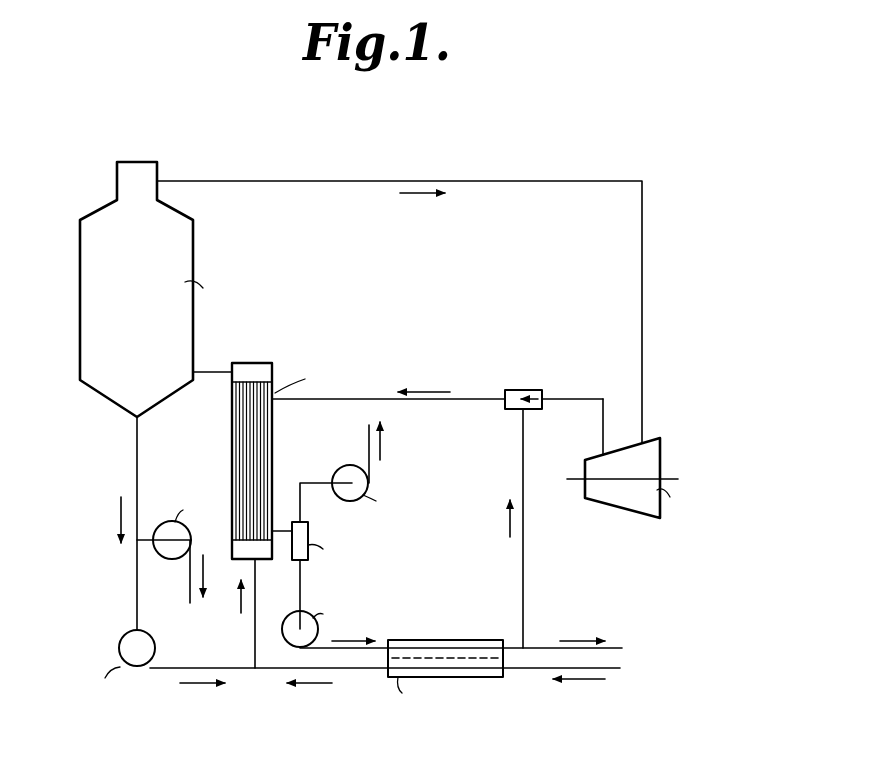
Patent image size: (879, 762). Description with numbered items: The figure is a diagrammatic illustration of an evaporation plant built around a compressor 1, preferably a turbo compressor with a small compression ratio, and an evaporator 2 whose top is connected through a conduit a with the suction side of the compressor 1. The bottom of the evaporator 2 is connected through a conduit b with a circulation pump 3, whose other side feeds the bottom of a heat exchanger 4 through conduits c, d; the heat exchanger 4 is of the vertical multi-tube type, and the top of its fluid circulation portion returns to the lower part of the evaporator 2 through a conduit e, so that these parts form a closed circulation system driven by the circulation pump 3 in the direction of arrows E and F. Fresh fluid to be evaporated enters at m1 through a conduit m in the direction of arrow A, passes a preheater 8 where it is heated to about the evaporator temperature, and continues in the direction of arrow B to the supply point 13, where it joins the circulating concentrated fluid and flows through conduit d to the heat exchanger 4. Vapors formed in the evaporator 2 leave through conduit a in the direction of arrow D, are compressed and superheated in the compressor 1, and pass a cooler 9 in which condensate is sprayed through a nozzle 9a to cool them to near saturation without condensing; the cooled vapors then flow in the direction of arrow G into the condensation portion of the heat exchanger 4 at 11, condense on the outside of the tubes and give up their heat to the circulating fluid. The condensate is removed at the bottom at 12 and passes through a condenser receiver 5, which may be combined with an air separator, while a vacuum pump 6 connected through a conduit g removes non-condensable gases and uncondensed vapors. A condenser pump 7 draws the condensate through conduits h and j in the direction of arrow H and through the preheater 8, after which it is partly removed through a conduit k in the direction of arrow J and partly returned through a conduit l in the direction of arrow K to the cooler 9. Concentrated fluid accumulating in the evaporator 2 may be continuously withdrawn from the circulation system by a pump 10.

The compressor 1 is at (657, 463).
The evaporator 2 is at (185, 255).
The circulation pump 3 is at (148, 642).
The heat exchanger 4 is at (272, 388).
The condenser receiver 5 is at (308, 528).
The vacuum pump 6 is at (368, 486).
The condenser pump 7 is at (377, 626).
The preheater 8 is at (495, 640).
The cooler 9 is at (542, 397).
The nozzle 9a is at (521, 398).
The pump 10 is at (186, 534).
The vapor inlet of heat exchanger 11 is at (275, 402).
The condensate outlet of heat exchanger 12 is at (275, 530).
The supply point 13 is at (255, 668).
The conduit a is at (515, 181).
The conduit b is at (137, 455).
The conduit c is at (241, 608).
The conduit d is at (255, 640).
The conduit e is at (213, 372).
The conduit g is at (300, 483).
The conduit h is at (300, 583).
The conduit j is at (365, 648).
The conduit k is at (622, 648).
The conduit l is at (525, 545).
The conduit m is at (533, 673).
The connection to fresh fluid supply m1 is at (620, 668).
The arrow A is at (580, 683).
The arrow B is at (313, 683).
The arrow D is at (405, 193).
The arrow E is at (119, 507).
The arrow F is at (195, 683).
The arrow G is at (450, 392).
The arrow H is at (348, 640).
The arrow J is at (563, 641).
The arrow K is at (510, 524).